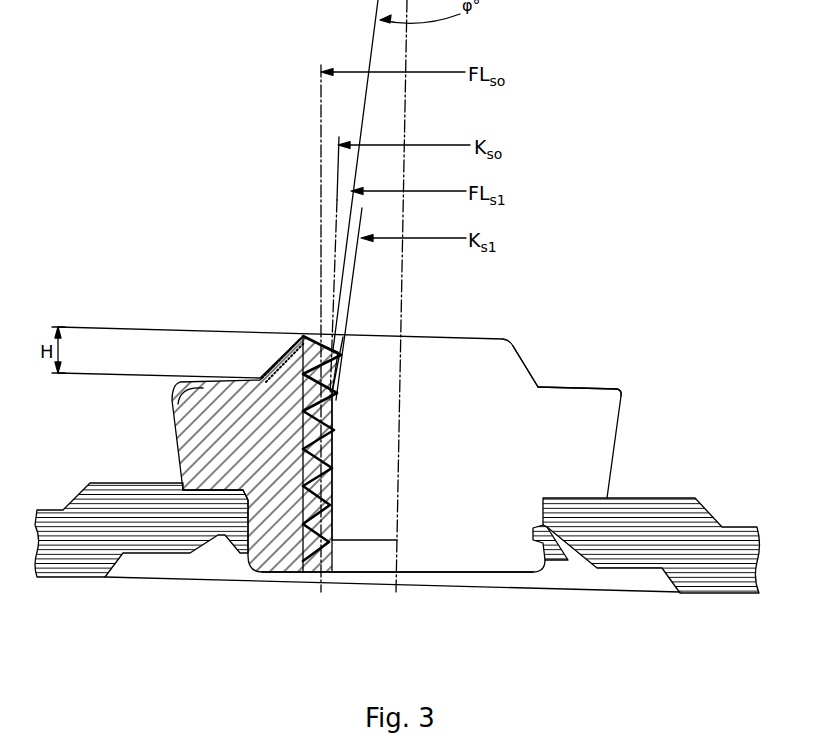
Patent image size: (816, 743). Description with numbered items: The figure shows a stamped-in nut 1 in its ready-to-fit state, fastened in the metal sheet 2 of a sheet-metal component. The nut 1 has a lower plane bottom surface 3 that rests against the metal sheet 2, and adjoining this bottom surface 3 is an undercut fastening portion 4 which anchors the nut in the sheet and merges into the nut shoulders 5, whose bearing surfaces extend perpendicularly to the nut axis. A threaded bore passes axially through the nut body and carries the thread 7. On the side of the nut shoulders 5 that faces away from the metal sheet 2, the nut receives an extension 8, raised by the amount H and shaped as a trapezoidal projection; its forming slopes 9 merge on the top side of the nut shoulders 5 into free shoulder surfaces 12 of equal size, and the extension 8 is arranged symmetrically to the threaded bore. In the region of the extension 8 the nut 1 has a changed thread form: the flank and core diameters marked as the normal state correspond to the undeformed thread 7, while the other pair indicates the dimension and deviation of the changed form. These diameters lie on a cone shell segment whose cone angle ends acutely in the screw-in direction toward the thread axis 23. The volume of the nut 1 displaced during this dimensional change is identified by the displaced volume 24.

The nut 1 is at (533, 458).
The metal sheet 2 is at (85, 558).
The bottom surface 3 is at (507, 578).
The undercut fastening portion 4 is at (560, 542).
The nut shoulders 5 is at (202, 443).
The thread 7 is at (333, 520).
The extension 8 is at (498, 372).
The forming slopes 9 is at (535, 378).
The free shoulder surfaces 12 is at (172, 402).
The thread axis 23 is at (393, 560).
The displaced nut volume 24 is at (281, 334).